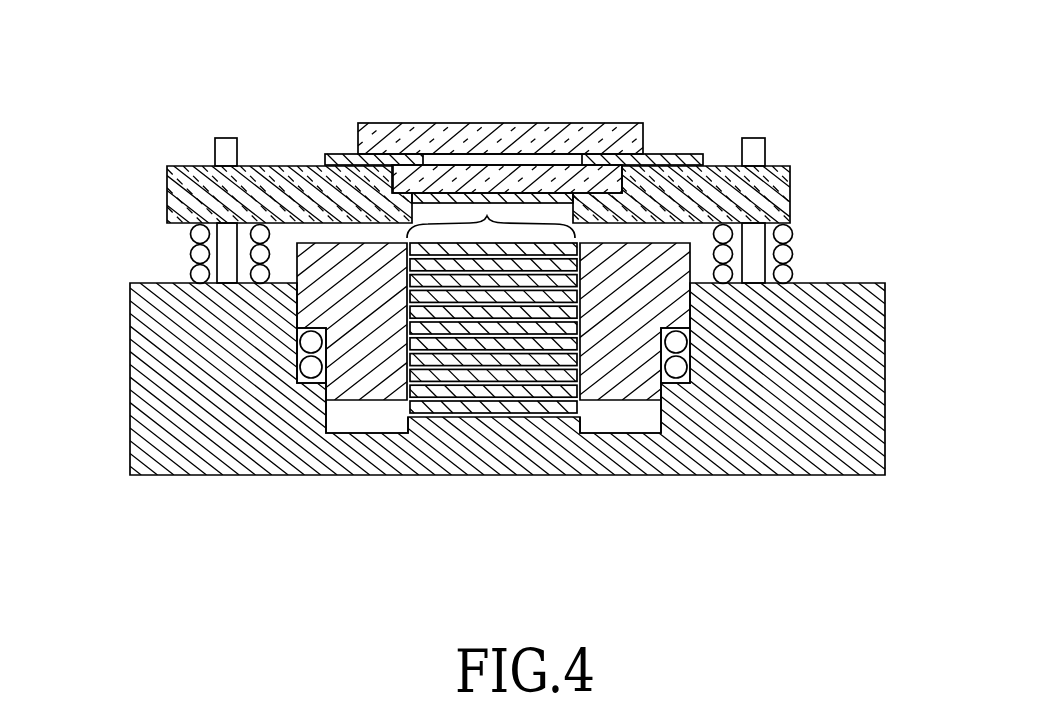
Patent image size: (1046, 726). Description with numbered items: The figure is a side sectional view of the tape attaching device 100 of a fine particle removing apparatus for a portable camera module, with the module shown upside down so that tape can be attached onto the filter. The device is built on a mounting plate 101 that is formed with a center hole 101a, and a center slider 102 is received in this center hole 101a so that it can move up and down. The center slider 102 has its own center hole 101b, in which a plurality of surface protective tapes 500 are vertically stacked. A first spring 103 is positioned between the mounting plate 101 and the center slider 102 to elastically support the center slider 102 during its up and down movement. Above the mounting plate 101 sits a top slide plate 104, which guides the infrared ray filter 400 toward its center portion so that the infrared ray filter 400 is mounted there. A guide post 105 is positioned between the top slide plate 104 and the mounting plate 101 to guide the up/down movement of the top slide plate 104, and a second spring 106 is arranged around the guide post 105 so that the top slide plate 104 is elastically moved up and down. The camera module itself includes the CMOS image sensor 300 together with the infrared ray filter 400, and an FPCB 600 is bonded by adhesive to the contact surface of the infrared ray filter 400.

The tape attaching device 100 is at (474, 304).
The mounting plate 101 is at (142, 380).
The center hole 101a is at (367, 420).
The center hole 101b is at (483, 207).
The center slider 102 is at (605, 395).
The first spring 103 is at (300, 372).
The top slide plate 104 is at (777, 190).
The guide post 105 is at (225, 152).
The second spring 106 is at (200, 255).
The CMOS image sensor 300 is at (380, 130).
The infrared ray filter 400 is at (492, 177).
The surface protective tape 500 is at (465, 390).
The FPCB 600 is at (665, 157).